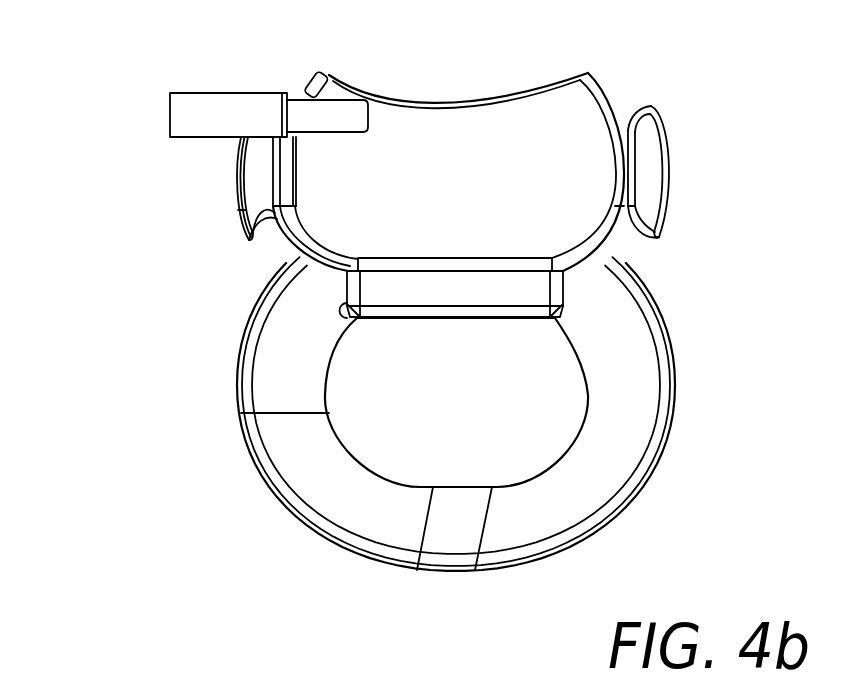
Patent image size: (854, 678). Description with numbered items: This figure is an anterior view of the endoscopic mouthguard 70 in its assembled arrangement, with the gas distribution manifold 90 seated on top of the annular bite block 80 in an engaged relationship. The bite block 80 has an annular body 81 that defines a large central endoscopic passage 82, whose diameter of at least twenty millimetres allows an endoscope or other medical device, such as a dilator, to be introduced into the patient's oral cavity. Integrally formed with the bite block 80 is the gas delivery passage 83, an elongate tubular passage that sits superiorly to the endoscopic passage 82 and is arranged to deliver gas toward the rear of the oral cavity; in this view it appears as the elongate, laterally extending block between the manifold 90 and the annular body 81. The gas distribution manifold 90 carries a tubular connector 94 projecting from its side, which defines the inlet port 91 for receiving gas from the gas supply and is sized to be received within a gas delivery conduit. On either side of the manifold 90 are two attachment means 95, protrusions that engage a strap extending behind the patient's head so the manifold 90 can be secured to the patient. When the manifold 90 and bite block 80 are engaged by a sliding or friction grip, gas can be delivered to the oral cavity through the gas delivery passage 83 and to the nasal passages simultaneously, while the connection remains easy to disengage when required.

The endoscopic mouthguard 70 is at (177, 392).
The annular bite block 80 is at (267, 485).
The annular body 81 is at (627, 367).
The endoscopic passage 82 is at (508, 404).
The gas delivery passage 83 is at (533, 285).
The gas distribution manifold 90 is at (290, 235).
The inlet port 91 is at (163, 108).
The tubular connector 94 is at (227, 103).
The attachment means 95 is at (243, 157).